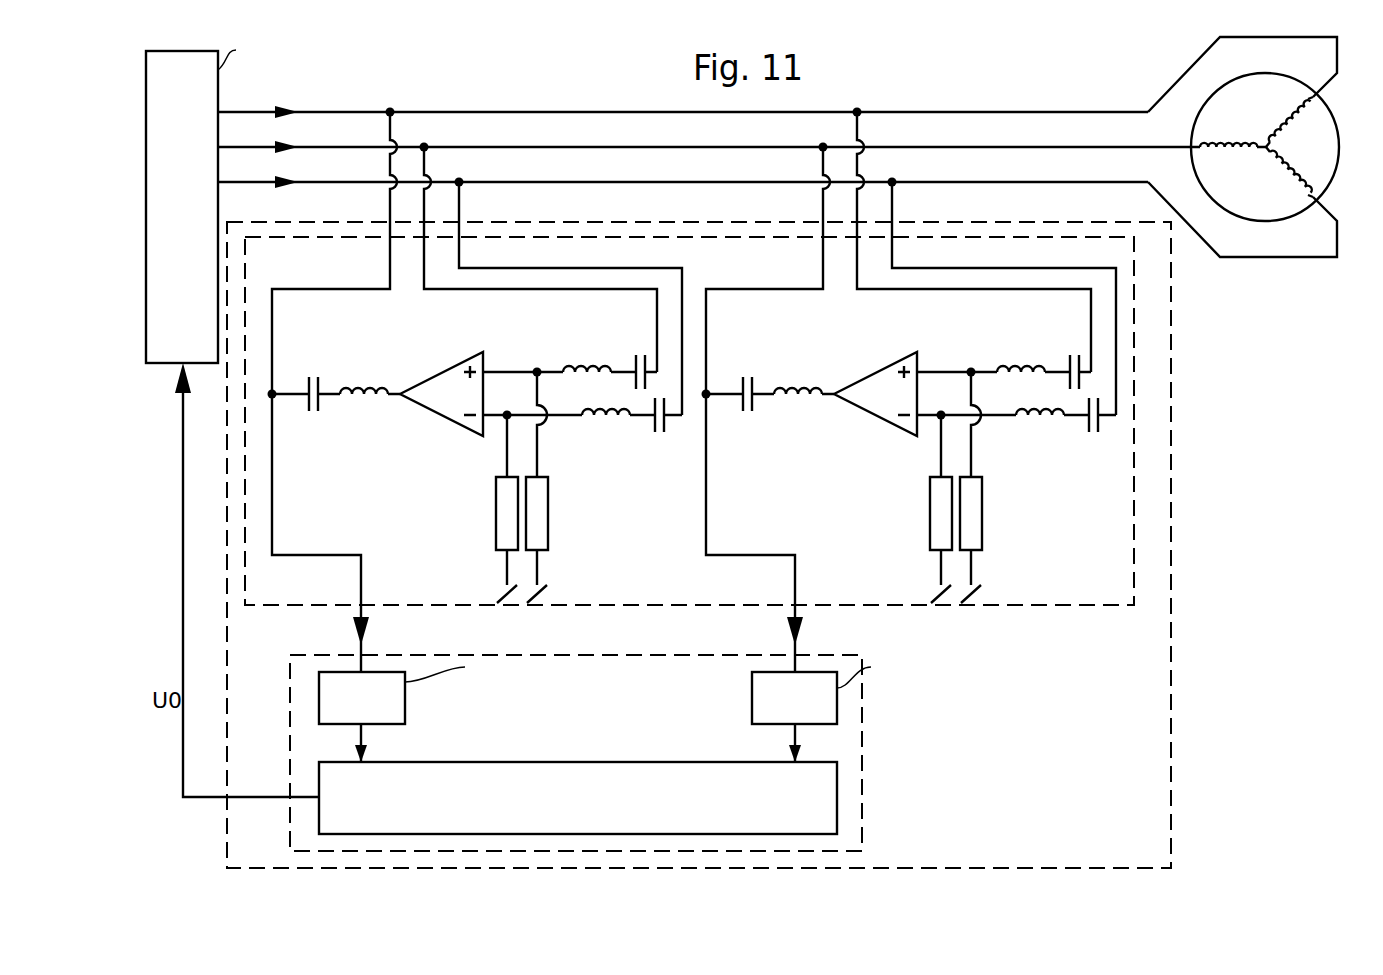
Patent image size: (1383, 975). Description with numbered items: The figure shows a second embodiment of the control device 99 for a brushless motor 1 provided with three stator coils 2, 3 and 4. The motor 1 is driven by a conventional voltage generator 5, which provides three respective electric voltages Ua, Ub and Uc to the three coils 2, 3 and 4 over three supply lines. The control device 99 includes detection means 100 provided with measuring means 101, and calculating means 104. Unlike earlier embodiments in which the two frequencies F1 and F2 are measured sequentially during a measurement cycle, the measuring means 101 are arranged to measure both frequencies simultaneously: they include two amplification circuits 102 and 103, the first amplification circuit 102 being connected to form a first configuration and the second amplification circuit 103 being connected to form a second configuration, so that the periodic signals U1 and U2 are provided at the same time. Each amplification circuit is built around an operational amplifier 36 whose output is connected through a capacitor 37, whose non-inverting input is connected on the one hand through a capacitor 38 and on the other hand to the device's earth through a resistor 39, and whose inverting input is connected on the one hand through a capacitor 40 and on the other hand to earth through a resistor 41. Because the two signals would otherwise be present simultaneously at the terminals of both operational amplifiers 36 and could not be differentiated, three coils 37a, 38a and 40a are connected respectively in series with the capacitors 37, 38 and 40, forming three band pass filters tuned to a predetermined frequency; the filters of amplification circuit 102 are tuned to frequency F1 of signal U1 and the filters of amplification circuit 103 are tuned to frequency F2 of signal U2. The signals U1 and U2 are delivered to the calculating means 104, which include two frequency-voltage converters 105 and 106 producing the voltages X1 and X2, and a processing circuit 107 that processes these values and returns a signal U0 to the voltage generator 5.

The brushless motor 1 is at (1176, 78).
The stator coil 2 is at (1292, 112).
The stator coil 3 is at (1226, 142).
The stator coil 4 is at (1292, 183).
The voltage generator 5 is at (146, 86).
The operational amplifier 36 is at (440, 366).
The capacitor 37 is at (306, 371).
The coil 37a is at (353, 406).
The capacitor 38 is at (640, 344).
The coil 38a is at (584, 362).
The resistor 39 is at (550, 530).
The capacitor 40 is at (662, 443).
The coil 40a is at (603, 430).
The resistor 41 is at (494, 530).
The control device 99 is at (575, 80).
The detection means 100 is at (1176, 650).
The measuring means 101 is at (1090, 609).
The amplification circuit 102 is at (412, 487).
The amplification circuit 103 is at (846, 487).
The calculating means 104 is at (866, 697).
The frequency-voltage converter 105 is at (388, 700).
The frequency-voltage converter 106 is at (757, 700).
The processing circuit 107 is at (553, 762).